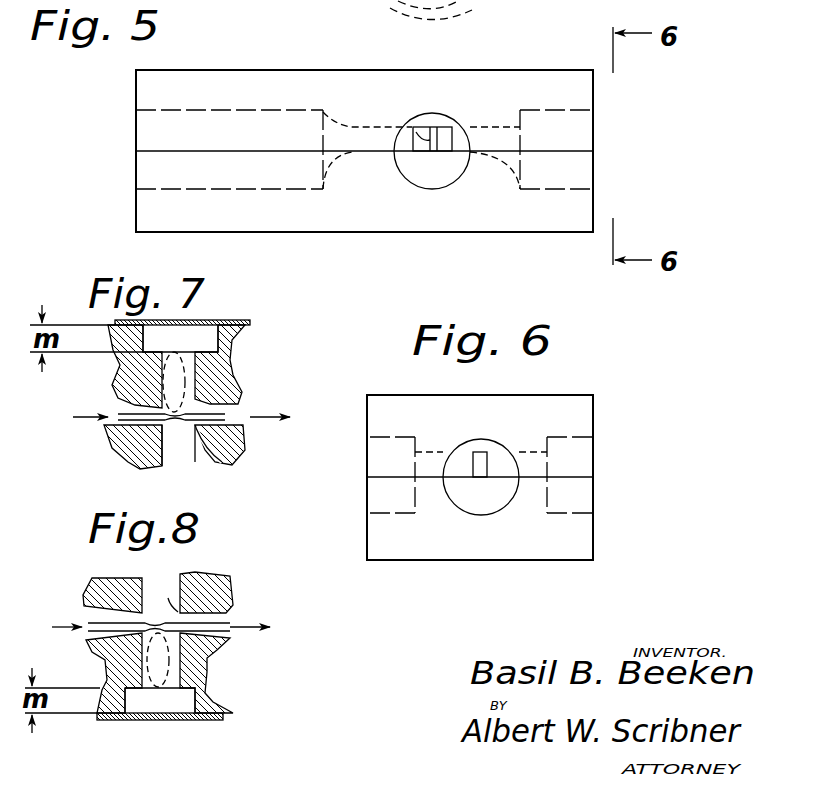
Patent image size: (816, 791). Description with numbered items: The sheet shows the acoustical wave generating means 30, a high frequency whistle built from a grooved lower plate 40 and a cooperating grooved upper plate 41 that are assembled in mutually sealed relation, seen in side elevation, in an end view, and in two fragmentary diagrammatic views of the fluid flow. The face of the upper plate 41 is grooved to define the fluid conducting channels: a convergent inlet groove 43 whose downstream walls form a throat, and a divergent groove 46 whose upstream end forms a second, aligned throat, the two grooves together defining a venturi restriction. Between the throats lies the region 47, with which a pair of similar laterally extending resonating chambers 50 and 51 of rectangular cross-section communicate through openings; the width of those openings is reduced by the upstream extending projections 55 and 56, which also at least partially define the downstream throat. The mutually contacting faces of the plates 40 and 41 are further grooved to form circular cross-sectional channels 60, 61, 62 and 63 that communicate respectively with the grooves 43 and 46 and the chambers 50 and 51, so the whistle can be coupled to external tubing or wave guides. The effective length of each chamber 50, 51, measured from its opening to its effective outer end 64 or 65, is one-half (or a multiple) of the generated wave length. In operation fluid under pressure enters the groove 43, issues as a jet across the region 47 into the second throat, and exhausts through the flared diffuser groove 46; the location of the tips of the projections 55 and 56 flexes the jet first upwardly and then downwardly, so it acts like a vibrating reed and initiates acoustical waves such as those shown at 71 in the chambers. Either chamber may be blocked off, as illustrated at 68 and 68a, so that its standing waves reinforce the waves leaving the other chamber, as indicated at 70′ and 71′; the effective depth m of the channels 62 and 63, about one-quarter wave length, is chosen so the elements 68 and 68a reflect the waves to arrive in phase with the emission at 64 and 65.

In FIG. 5, the acoustical wave generating means 30 is at (128, 172).
In FIG. 6, the acoustical wave generating means 30 is at (364, 500).
In FIG. 5, the lower plate 40 is at (492, 224).
In FIG. 6, the lower plate 40 is at (580, 548).
In FIG. 5, the upper plate 41 is at (478, 70).
In FIG. 6, the upper plate 41 is at (575, 414).
In FIG. 5, the convergent inlet groove 43 is at (372, 100).
In FIG. 5, the divergent groove 46 is at (492, 130).
In FIG. 6, the region between throats 47 is at (480, 454).
In FIG. 5, the resonating chamber 50 is at (442, 146).
In FIG. 7, the resonating chamber 50 is at (192, 372).
In FIG. 8, the resonating chamber 51 is at (170, 672).
In FIG. 5, the upstream extending projection 55 is at (412, 128).
In FIG. 8, the upstream extending projection 55 is at (180, 616).
In FIG. 7, the upstream extending projection 56 is at (176, 462).
In FIG. 5, the circular cross-sectional channel 60 is at (180, 148).
In FIG. 5, the circular cross-sectional channel 61 is at (548, 147).
In FIG. 6, the circular cross-sectional channel 61 is at (470, 498).
In FIG. 5, the circular cross-sectional channel 62 is at (450, 178).
In FIG. 6, the circular cross-sectional channel 62 is at (386, 463).
In FIG. 6, the circular cross-sectional channel 63 is at (578, 467).
In FIG. 7, the effective outer end 64 is at (187, 342).
In FIG. 8, the effective outer end 65 is at (176, 718).
In FIG. 7, the blocking element 68 is at (250, 322).
In FIG. 8, the blocking element 68a is at (224, 720).
In FIG. 7, the reinforced acoustical waves 70′ is at (143, 345).
In FIG. 5, the acoustical waves 71 is at (424, 20).
In FIG. 8, the reinforced acoustical waves 71′ is at (140, 690).